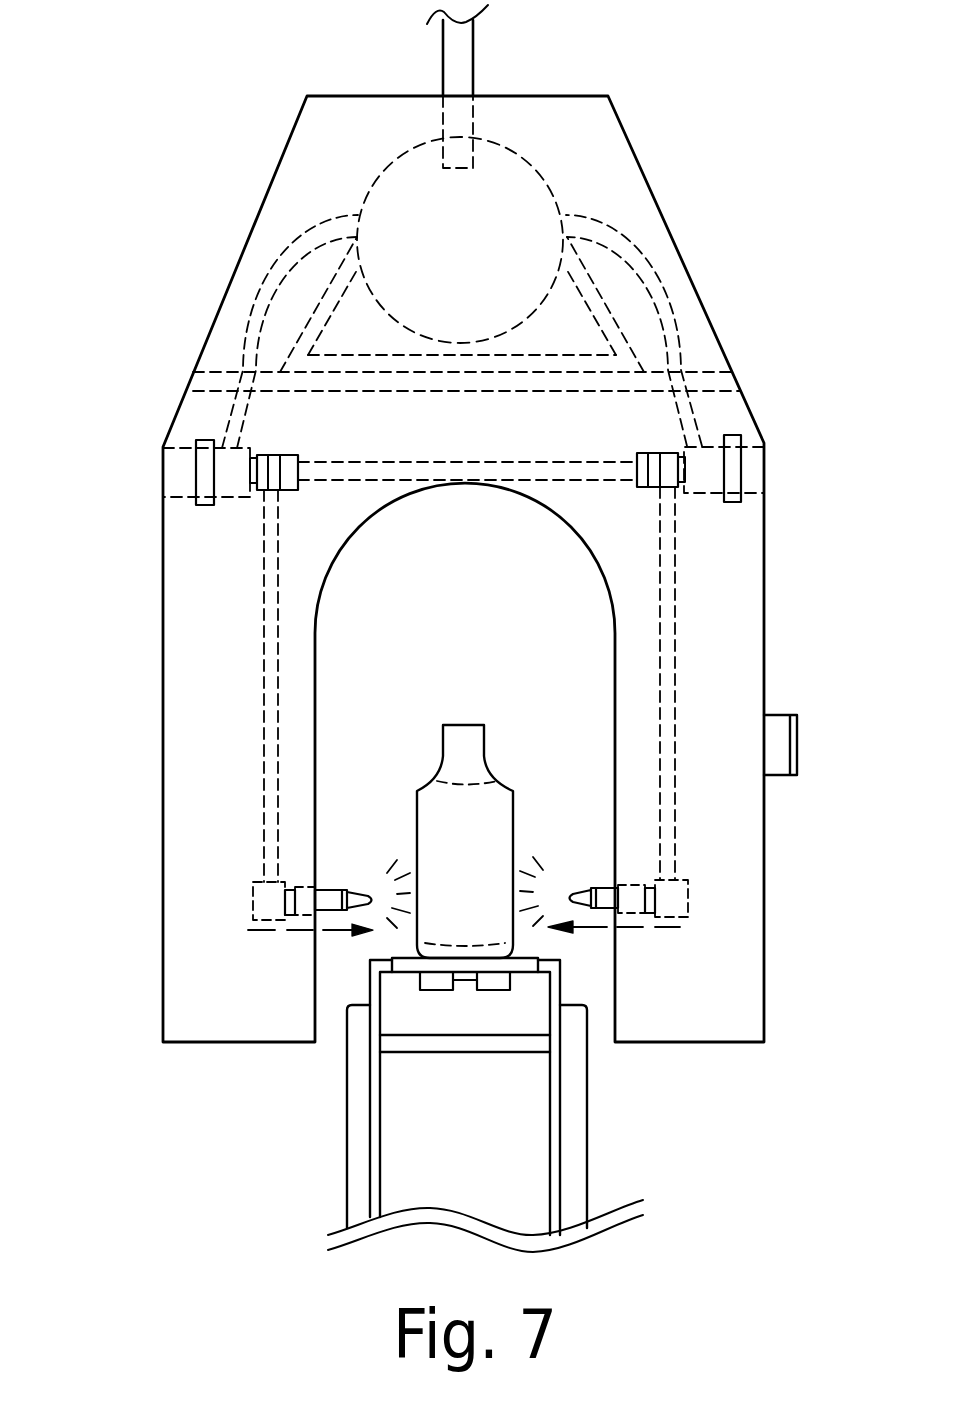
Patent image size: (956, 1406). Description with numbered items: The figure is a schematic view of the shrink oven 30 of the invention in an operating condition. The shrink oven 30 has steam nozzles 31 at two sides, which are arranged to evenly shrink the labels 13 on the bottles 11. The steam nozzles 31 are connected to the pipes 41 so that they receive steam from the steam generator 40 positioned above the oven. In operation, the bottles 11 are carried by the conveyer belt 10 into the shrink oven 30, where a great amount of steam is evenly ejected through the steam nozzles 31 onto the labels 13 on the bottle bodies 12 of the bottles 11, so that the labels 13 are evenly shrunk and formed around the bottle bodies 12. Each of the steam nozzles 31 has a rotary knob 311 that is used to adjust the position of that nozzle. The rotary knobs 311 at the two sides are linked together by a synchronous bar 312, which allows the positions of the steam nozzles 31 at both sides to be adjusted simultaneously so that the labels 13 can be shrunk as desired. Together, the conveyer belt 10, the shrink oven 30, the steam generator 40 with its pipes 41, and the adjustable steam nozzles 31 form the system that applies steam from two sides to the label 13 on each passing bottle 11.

The conveyer belt 10 is at (358, 1118).
The bottle 11 is at (440, 696).
The bottle body 12 is at (503, 783).
The label 13 is at (417, 797).
The shrink oven 30 is at (151, 354).
The steam nozzle 31 is at (265, 893).
The rotary knob 311 is at (205, 505).
The synchronous bar 312 is at (318, 462).
The steam generator 40 is at (398, 185).
The pipe 41 is at (457, 58).